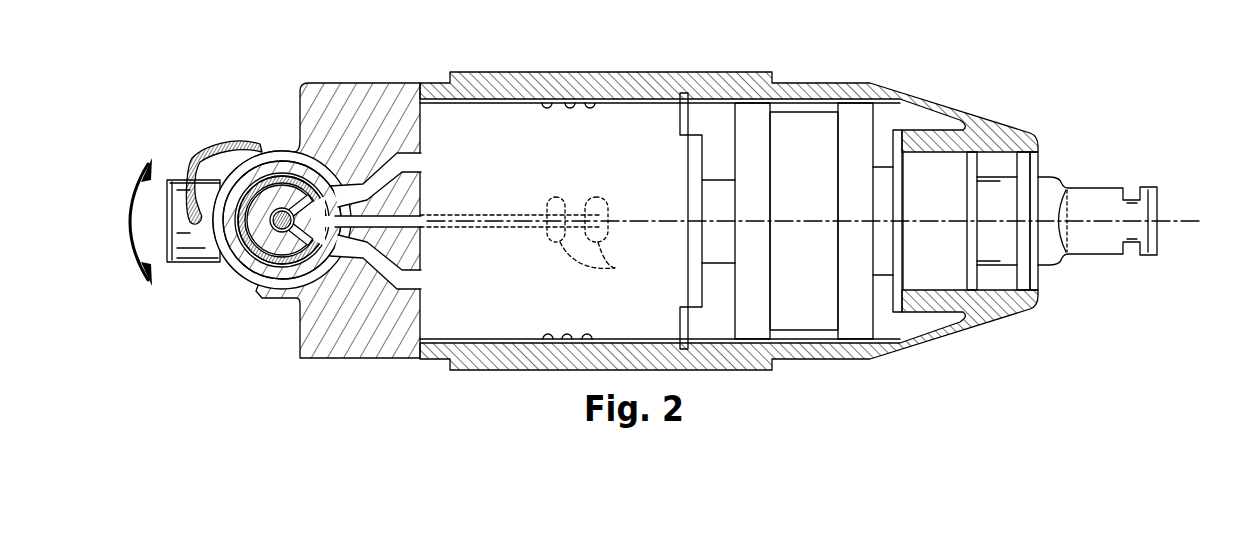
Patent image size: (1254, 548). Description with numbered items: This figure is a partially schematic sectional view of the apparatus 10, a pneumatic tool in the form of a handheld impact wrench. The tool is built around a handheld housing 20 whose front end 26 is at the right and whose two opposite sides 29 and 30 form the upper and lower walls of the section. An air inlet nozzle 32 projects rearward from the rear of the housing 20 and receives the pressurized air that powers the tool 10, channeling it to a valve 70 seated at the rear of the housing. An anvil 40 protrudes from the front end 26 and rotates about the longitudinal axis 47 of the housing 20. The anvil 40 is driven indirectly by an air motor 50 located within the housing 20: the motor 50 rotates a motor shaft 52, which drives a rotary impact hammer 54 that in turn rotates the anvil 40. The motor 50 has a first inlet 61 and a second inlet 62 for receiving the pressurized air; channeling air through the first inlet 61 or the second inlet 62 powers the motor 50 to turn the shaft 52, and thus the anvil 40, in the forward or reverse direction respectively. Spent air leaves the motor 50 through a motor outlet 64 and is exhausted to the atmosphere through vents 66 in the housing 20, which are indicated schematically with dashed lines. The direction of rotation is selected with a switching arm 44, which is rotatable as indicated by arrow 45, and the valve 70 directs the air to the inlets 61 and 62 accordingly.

The apparatus 10 is at (1022, 82).
The handheld housing 20 is at (840, 82).
The front end 26 is at (1038, 294).
The side 29 is at (557, 71).
The side 30 is at (525, 372).
The air inlet nozzle 32 is at (196, 262).
The anvil 40 is at (1090, 186).
The switching arm 44 is at (222, 145).
The arrow 45 is at (136, 236).
The longitudinal axis 47 is at (1206, 218).
The air motor 50 is at (627, 190).
The motor shaft 52 is at (733, 217).
The rotary impact hammer 54 is at (823, 177).
The first inlet 61 is at (426, 291).
The second inlet 62 is at (426, 151).
The motor outlet 64 is at (547, 106).
The vents 66 is at (606, 262).
The valve 70 is at (238, 118).